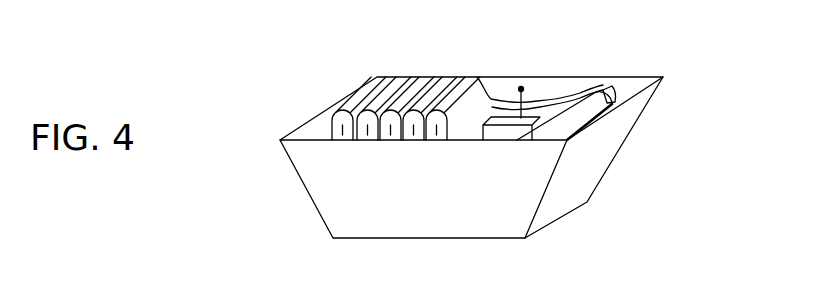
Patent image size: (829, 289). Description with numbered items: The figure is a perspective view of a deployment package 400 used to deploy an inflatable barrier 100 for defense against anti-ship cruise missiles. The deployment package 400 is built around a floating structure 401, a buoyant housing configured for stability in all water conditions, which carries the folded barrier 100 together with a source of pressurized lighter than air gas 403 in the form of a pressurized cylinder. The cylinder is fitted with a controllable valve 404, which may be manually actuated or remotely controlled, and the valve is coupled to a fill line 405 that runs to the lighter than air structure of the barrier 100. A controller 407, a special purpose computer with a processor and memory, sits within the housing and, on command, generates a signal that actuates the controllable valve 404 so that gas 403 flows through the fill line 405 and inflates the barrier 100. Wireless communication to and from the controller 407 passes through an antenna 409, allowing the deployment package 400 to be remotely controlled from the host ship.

The deployment package 400 is at (220, 106).
The barrier 100 is at (403, 92).
The floating structure 401 is at (457, 157).
The source of pressurized lighter than air gas 403 is at (578, 115).
The controllable valve 404 is at (613, 86).
The fill line 405 is at (572, 87).
The controller 407 is at (502, 121).
The antenna 409 is at (540, 104).